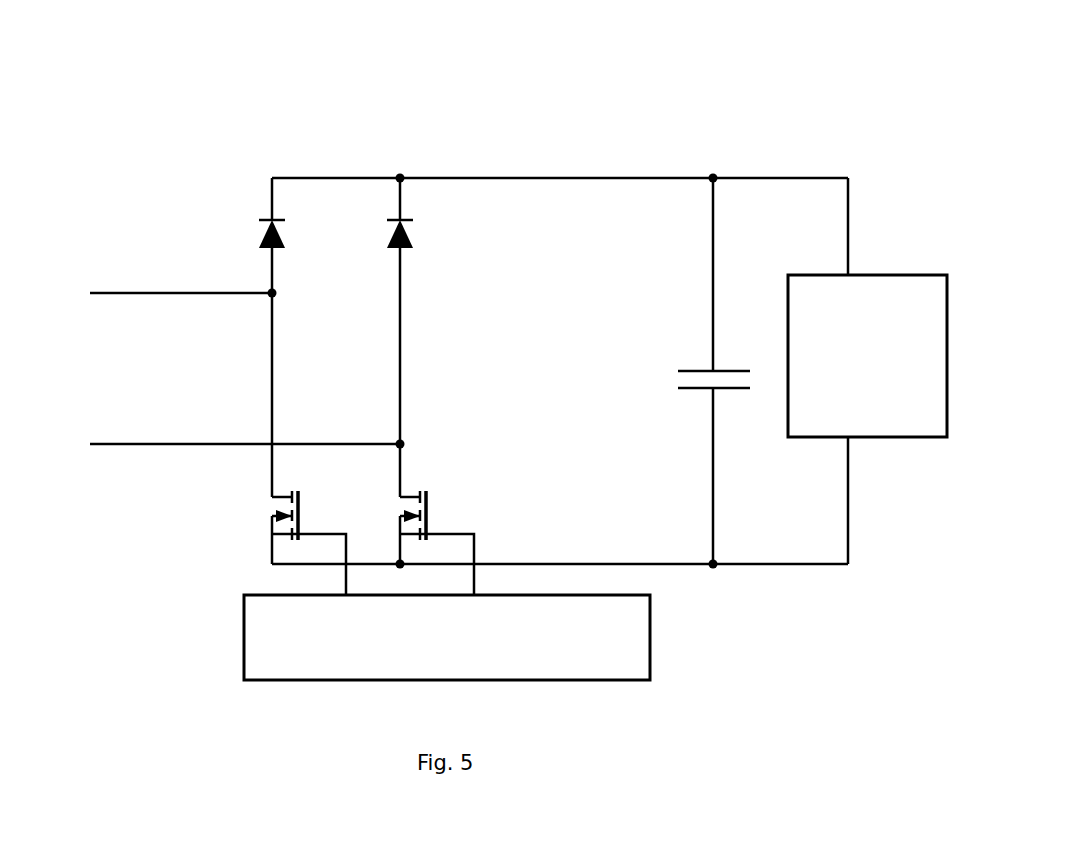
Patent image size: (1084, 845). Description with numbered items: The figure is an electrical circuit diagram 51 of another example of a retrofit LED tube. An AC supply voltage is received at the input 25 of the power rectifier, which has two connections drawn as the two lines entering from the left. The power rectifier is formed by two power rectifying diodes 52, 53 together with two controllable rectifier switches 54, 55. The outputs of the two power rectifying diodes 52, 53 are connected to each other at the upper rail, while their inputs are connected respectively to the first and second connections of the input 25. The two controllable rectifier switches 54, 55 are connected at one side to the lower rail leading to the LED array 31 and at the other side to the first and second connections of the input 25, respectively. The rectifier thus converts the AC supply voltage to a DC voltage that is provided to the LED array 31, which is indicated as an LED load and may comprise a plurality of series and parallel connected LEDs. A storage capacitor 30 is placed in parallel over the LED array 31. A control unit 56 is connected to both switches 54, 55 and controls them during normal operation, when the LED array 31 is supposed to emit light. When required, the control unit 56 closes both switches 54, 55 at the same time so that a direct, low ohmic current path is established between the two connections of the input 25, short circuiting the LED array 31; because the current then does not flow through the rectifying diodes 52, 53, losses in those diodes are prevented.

The electrical circuit diagram 51 is at (748, 100).
The input 25 is at (90, 375).
The power rectifying diode 52 is at (248, 225).
The power rectifying diode 53 is at (378, 204).
The controllable rectifier switch 54 is at (255, 512).
The controllable rectifier switch 55 is at (432, 507).
The storage capacitor 30 is at (735, 408).
The LED array 31 is at (898, 420).
The control unit 56 is at (632, 657).